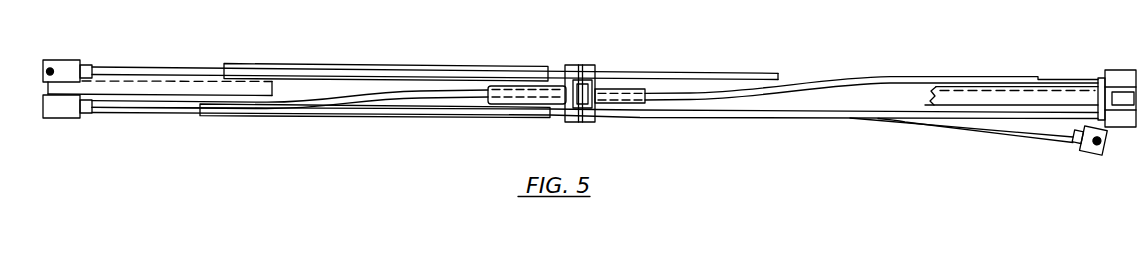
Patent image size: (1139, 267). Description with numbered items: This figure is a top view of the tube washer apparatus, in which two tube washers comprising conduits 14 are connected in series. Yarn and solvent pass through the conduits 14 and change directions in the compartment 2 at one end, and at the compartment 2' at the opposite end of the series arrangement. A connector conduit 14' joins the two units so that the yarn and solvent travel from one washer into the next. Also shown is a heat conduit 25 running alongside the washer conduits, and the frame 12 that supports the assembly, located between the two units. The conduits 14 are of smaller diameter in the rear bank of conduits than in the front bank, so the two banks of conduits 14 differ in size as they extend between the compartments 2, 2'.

The compartment 2 is at (51, 88).
The compartment 2' is at (1086, 156).
The frame 12 is at (595, 65).
The conduits 14 is at (595, 99).
The connector conduit 14' is at (871, 66).
The heat conduit 25 is at (293, 64).